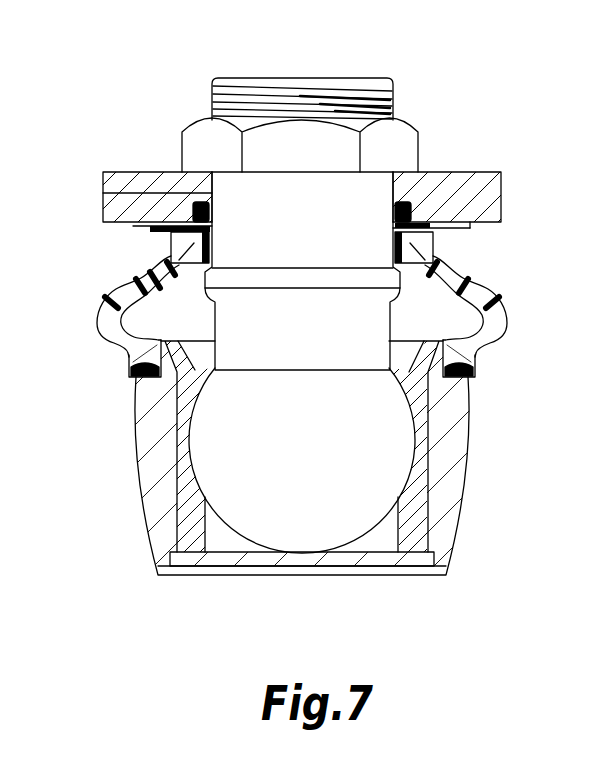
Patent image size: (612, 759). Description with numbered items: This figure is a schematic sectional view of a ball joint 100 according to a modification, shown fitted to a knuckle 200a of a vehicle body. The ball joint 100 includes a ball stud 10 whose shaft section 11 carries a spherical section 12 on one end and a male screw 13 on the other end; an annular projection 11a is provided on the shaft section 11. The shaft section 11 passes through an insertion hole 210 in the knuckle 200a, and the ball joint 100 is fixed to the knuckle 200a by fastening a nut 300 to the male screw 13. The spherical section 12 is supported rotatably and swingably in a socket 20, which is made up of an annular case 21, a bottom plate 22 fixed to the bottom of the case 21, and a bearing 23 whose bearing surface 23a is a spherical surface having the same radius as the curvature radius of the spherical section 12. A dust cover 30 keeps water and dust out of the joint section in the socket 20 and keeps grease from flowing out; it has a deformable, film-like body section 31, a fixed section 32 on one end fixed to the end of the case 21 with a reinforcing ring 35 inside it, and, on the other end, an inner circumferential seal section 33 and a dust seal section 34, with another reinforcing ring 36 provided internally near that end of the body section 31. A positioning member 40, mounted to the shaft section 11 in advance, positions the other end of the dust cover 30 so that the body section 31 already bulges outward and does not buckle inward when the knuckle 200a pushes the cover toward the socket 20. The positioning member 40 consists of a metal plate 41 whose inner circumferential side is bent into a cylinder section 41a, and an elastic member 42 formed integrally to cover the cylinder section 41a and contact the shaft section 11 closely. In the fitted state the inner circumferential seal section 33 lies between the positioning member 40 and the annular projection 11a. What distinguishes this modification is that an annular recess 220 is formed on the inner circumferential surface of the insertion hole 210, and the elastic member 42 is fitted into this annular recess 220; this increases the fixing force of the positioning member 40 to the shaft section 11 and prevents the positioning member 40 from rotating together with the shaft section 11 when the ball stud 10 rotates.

The ball joint 100 is at (122, 481).
The ball stud 10 is at (414, 98).
The shaft section 11 is at (240, 193).
The annular projection 11a is at (250, 284).
The spherical section 12 is at (203, 415).
The male screw 13 is at (252, 103).
The nut 300 is at (414, 148).
The knuckle 200a is at (119, 171).
The insertion hole 210 is at (200, 192).
The annular recess 220 is at (103, 192).
The positioning member 40 is at (487, 229).
The metal plate 41 is at (445, 222).
The cylinder section 41a is at (415, 215).
The elastic member 42 is at (398, 202).
The dust cover 30 is at (503, 277).
The body section 31 is at (508, 305).
The fixed section 32 is at (476, 358).
The inner circumferential seal section 33 is at (200, 204).
The dust seal section 34 is at (148, 237).
The reinforcing ring 35 is at (476, 371).
The reinforcing ring 36 is at (168, 250).
The socket 20 is at (467, 540).
The case 21 is at (458, 481).
The bottom plate 22 is at (374, 565).
The bearing 23 is at (192, 543).
The bearing surface 23a is at (193, 473).